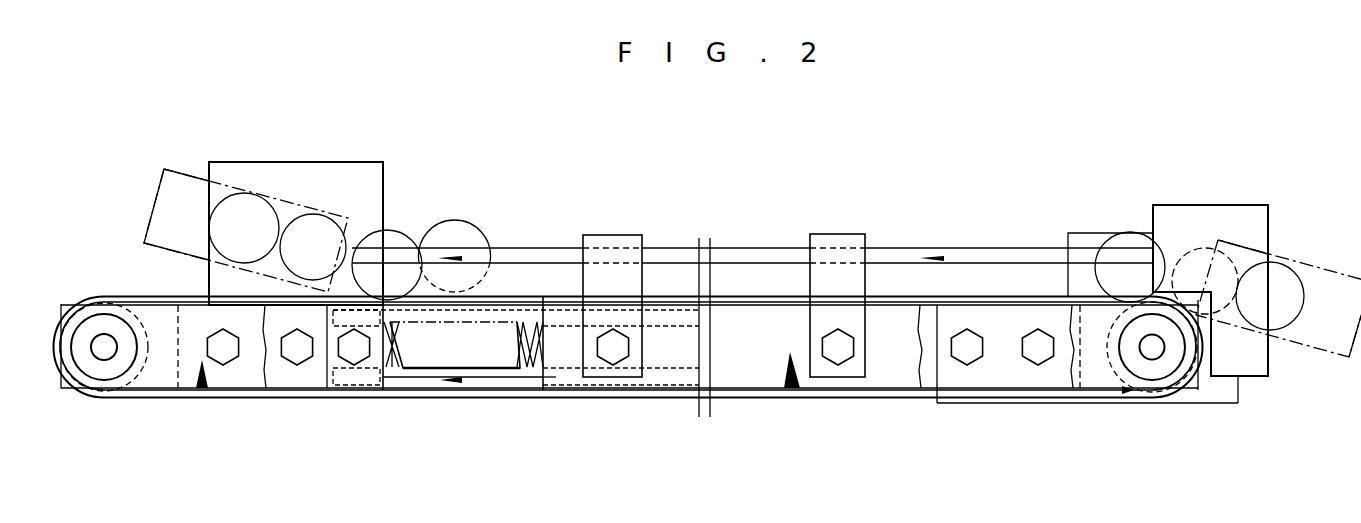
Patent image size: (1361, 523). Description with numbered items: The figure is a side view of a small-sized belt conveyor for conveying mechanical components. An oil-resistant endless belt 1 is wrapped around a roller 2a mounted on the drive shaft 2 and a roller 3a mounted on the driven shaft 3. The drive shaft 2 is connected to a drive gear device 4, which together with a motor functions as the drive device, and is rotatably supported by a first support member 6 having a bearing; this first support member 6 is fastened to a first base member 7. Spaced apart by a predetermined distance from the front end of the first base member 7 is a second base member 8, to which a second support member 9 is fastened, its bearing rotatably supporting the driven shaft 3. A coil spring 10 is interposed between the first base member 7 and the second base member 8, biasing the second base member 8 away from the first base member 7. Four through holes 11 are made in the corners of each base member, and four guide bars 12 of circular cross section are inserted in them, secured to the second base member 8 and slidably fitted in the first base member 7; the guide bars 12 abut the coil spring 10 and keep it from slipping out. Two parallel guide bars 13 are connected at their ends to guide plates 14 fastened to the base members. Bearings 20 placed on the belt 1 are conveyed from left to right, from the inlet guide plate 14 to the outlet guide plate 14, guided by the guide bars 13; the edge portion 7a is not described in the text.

The endless belt 1 is at (553, 300).
The drive shaft 2 is at (1155, 352).
The roller 2a is at (1108, 370).
The driven shaft 3 is at (107, 352).
The roller 3a is at (145, 373).
The drive gear device 4 is at (1080, 233).
The first support member 6 is at (995, 378).
The first base member 7 is at (755, 375).
The chain guide edge 7a is at (550, 378).
The second base member 8 is at (332, 360).
The second support member 9 is at (163, 378).
The coil spring 10 is at (515, 358).
The through holes 11 is at (362, 300).
The guide bars 12 is at (500, 315).
The guide bars 13 is at (760, 253).
The guide plates 14 is at (300, 180).
The bearings 20 is at (470, 232).